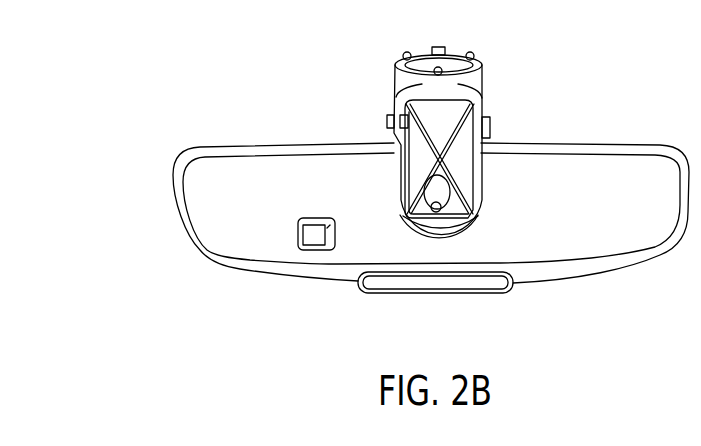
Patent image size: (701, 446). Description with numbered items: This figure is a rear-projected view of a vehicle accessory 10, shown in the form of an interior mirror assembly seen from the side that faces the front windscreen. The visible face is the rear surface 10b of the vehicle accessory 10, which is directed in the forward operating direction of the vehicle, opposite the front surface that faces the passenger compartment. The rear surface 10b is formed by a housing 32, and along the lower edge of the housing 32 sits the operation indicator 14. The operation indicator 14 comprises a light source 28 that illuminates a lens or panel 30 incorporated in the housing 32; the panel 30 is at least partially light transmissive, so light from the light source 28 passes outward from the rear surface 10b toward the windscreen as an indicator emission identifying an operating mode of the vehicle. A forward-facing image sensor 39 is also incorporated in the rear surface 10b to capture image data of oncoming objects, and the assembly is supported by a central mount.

The vehicle accessory 10 is at (370, 202).
The rear surface 10b is at (227, 217).
The housing 32 is at (237, 167).
The forward-facing image sensor 39 is at (297, 234).
The operation indicator 14 is at (407, 314).
The lens or panel 30 is at (407, 314).
The light source 28 is at (453, 282).